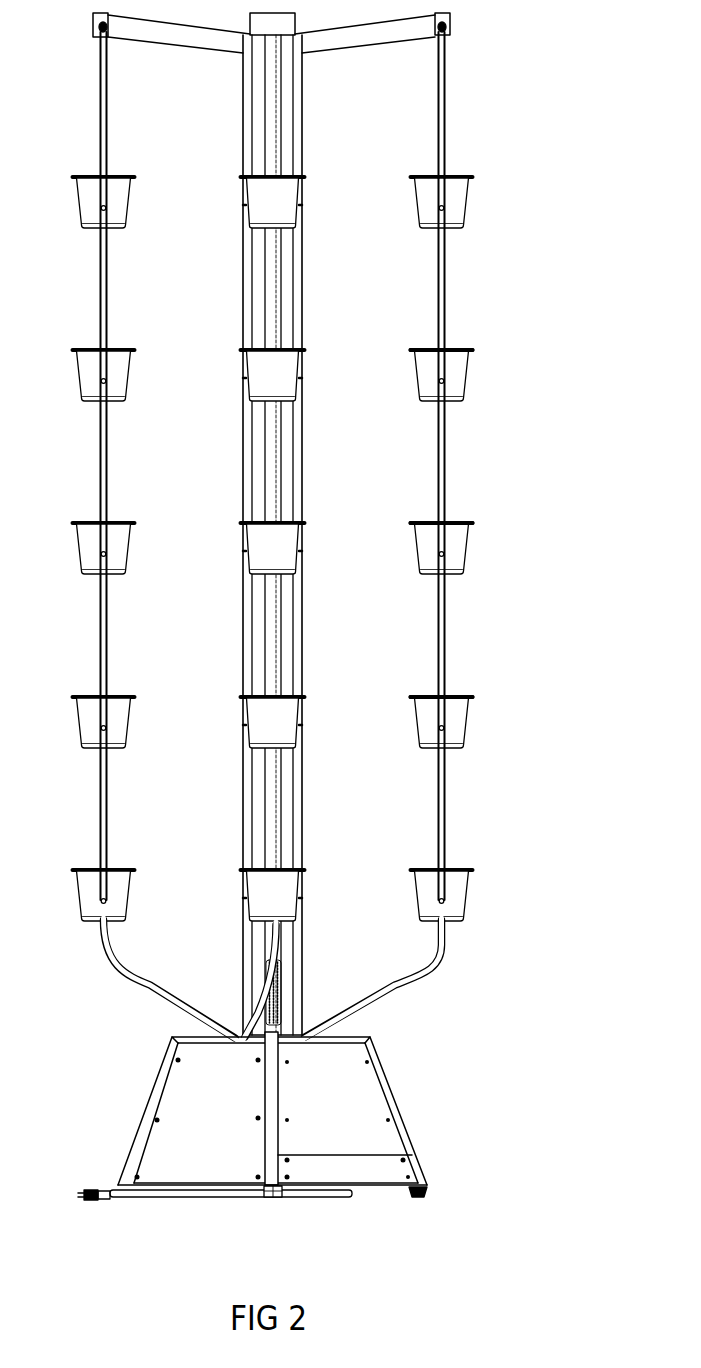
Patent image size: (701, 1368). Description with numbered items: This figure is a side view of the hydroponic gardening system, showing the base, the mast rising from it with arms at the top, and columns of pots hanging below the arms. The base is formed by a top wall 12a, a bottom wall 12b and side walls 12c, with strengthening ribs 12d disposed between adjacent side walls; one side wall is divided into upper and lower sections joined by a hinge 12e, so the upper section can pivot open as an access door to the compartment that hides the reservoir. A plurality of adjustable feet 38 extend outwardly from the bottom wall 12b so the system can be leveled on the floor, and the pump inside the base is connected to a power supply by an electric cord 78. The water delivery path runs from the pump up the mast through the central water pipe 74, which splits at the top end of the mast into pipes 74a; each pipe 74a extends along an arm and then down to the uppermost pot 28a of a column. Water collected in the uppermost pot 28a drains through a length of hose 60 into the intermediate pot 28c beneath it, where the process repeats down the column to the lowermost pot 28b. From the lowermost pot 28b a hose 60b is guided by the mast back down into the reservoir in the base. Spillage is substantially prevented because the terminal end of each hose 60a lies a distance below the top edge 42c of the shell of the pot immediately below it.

The water pipe 74 is at (272, 121).
The pipe 74a is at (102, 82).
The uppermost pot 28a is at (455, 195).
The lowermost pot 28b is at (457, 895).
The intermediate pot 28c is at (457, 368).
The top edge of shell 42c is at (420, 343).
The hose 60 is at (446, 452).
The terminal end of hose 60a is at (437, 383).
The hose 60b is at (253, 992).
The top wall 12a is at (350, 1033).
The bottom wall 12b is at (370, 1190).
The side wall 12c is at (231, 1129).
The strengthening rib 12d is at (155, 1097).
The hinge 12e is at (352, 1152).
The foot 38 is at (270, 1199).
The electric cord 78 is at (98, 1203).